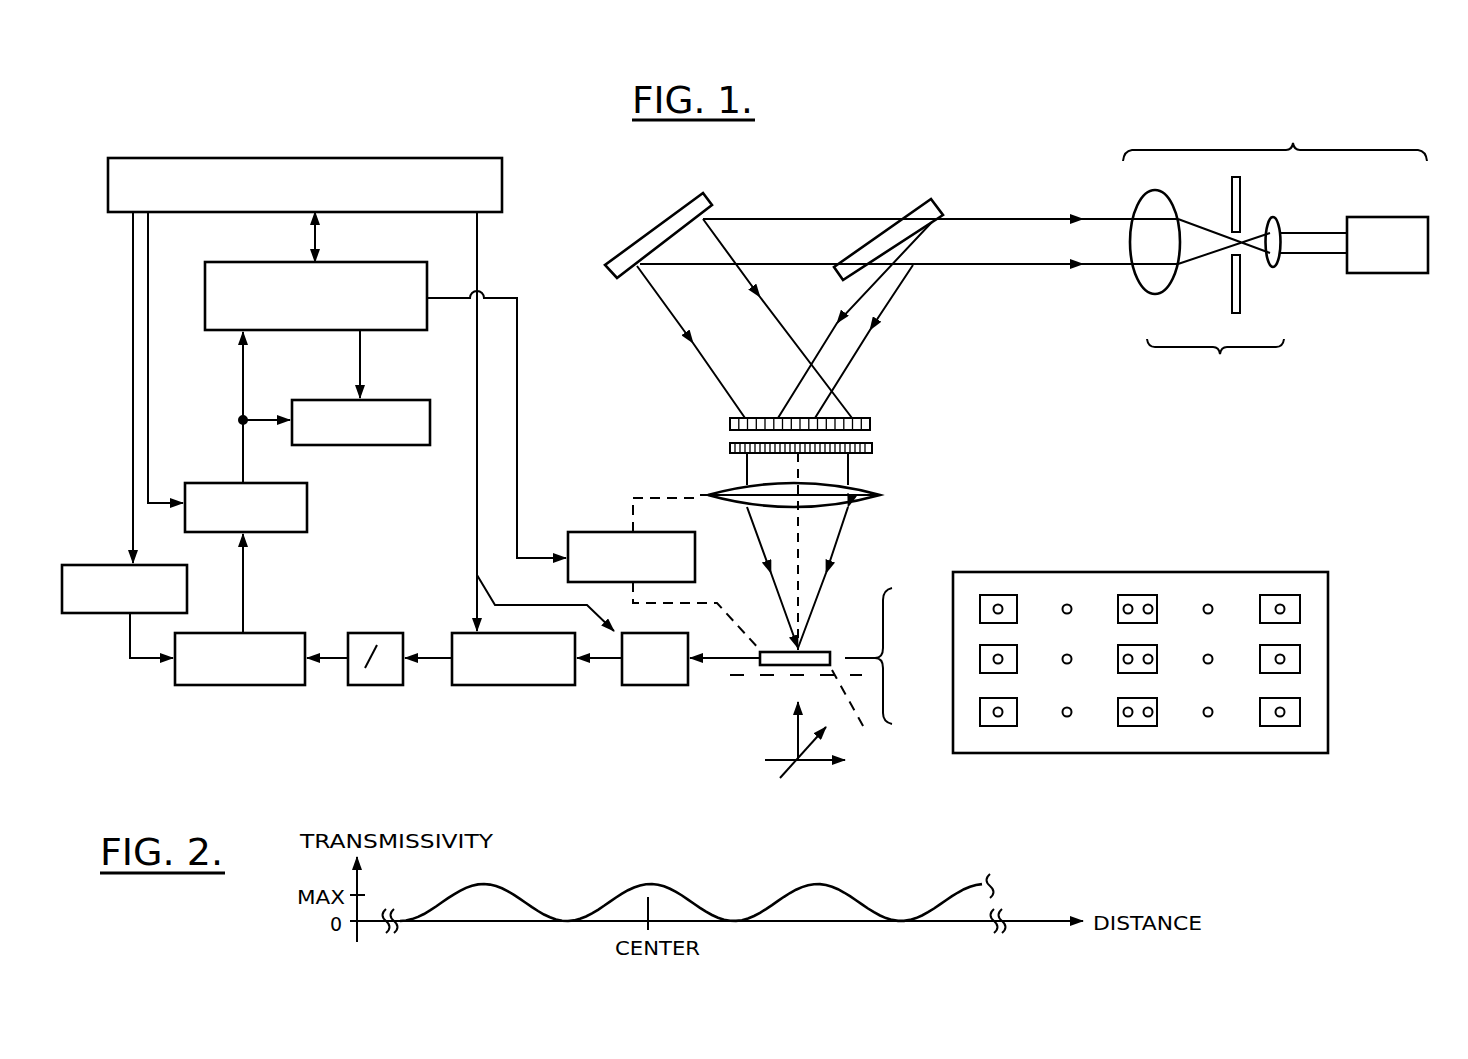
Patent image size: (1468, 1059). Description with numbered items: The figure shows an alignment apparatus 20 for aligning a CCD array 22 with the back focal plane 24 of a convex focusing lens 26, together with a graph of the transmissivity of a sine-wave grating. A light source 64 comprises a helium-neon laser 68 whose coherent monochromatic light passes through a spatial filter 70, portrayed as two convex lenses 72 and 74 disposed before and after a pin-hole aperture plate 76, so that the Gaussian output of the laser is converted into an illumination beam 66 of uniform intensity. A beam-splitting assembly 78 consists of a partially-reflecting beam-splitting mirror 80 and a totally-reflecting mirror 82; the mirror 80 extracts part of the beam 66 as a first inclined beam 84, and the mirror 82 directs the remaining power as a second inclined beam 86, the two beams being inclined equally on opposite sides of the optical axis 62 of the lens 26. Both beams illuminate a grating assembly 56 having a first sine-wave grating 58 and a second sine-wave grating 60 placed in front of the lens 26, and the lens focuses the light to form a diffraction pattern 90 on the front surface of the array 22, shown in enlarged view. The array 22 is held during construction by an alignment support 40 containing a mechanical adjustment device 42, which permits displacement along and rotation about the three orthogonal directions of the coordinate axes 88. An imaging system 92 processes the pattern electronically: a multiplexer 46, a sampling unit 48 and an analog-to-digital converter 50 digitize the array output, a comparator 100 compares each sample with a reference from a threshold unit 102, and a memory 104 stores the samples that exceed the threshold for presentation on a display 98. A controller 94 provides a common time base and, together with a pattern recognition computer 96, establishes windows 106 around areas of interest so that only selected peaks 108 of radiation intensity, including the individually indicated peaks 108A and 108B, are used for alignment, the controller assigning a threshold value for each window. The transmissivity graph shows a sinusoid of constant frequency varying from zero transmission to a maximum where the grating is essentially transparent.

The alignment apparatus 20 is at (784, 201).
The CCD array 22 is at (822, 650).
The back focal plane 24 is at (811, 674).
The convex focusing lens 26 is at (880, 495).
The alignment support 40 is at (633, 496).
The mechanical adjustment device 42 is at (575, 532).
The multiplexer 46 is at (638, 685).
The sampling unit 48 is at (503, 685).
The analog-to-digital converter 50 is at (384, 633).
The grating assembly 56 is at (920, 422).
The first sine-wave grating 58 is at (862, 418).
The second sine-wave grating 60 is at (872, 453).
The optical axis 62 is at (803, 533).
The light source 64 is at (1279, 265).
The illumination beam 66 is at (1045, 247).
The helium-neon laser 68 is at (1383, 217).
The spatial filter 70 is at (1231, 285).
The convex lens 72 is at (1280, 222).
The convex lens 74 is at (1165, 192).
The pin-hole aperture plate 76 is at (1243, 192).
The beam-splitting assembly 78 is at (947, 290).
The beam-splitting mirror 80 is at (908, 215).
The totally-reflecting mirror 82 is at (650, 227).
The first inclined beam 84 is at (870, 300).
The second inclined beam 86 is at (703, 307).
The coordinate axes 88 is at (795, 735).
The diffraction pattern 90 is at (975, 770).
The imaging system 92 is at (305, 152).
The controller 94 is at (336, 155).
The pattern recognition computer 96 is at (405, 262).
The display 98 is at (405, 400).
The comparator 100 is at (243, 685).
The threshold unit 102 is at (100, 565).
The memory 104 is at (288, 532).
The windows 106 is at (1302, 659).
The peaks 108 is at (1072, 738).
The diffraction spot 108A is at (1210, 654).
The diffraction spot 108B is at (1066, 654).